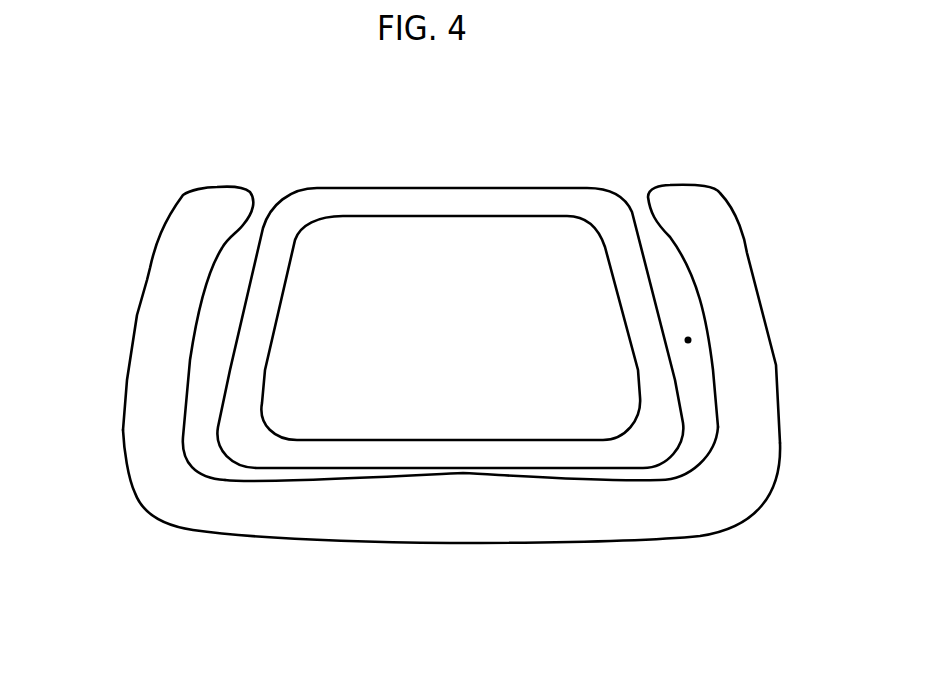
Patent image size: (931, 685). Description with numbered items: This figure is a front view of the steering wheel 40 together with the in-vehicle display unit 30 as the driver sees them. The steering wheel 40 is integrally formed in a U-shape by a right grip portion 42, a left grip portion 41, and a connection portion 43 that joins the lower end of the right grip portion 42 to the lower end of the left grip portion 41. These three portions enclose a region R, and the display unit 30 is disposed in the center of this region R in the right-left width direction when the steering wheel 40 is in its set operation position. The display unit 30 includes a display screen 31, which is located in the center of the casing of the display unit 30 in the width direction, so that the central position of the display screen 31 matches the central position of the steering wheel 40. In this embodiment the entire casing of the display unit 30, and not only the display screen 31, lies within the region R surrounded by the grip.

The in-vehicle display unit 30 is at (557, 187).
The display screen 31 is at (382, 216).
The steering wheel 40 is at (439, 405).
The left grip portion 41 is at (137, 315).
The right grip portion 42 is at (755, 263).
The connection portion 43 is at (390, 543).
The region surrounded by the grip of the steering wheel R is at (688, 340).